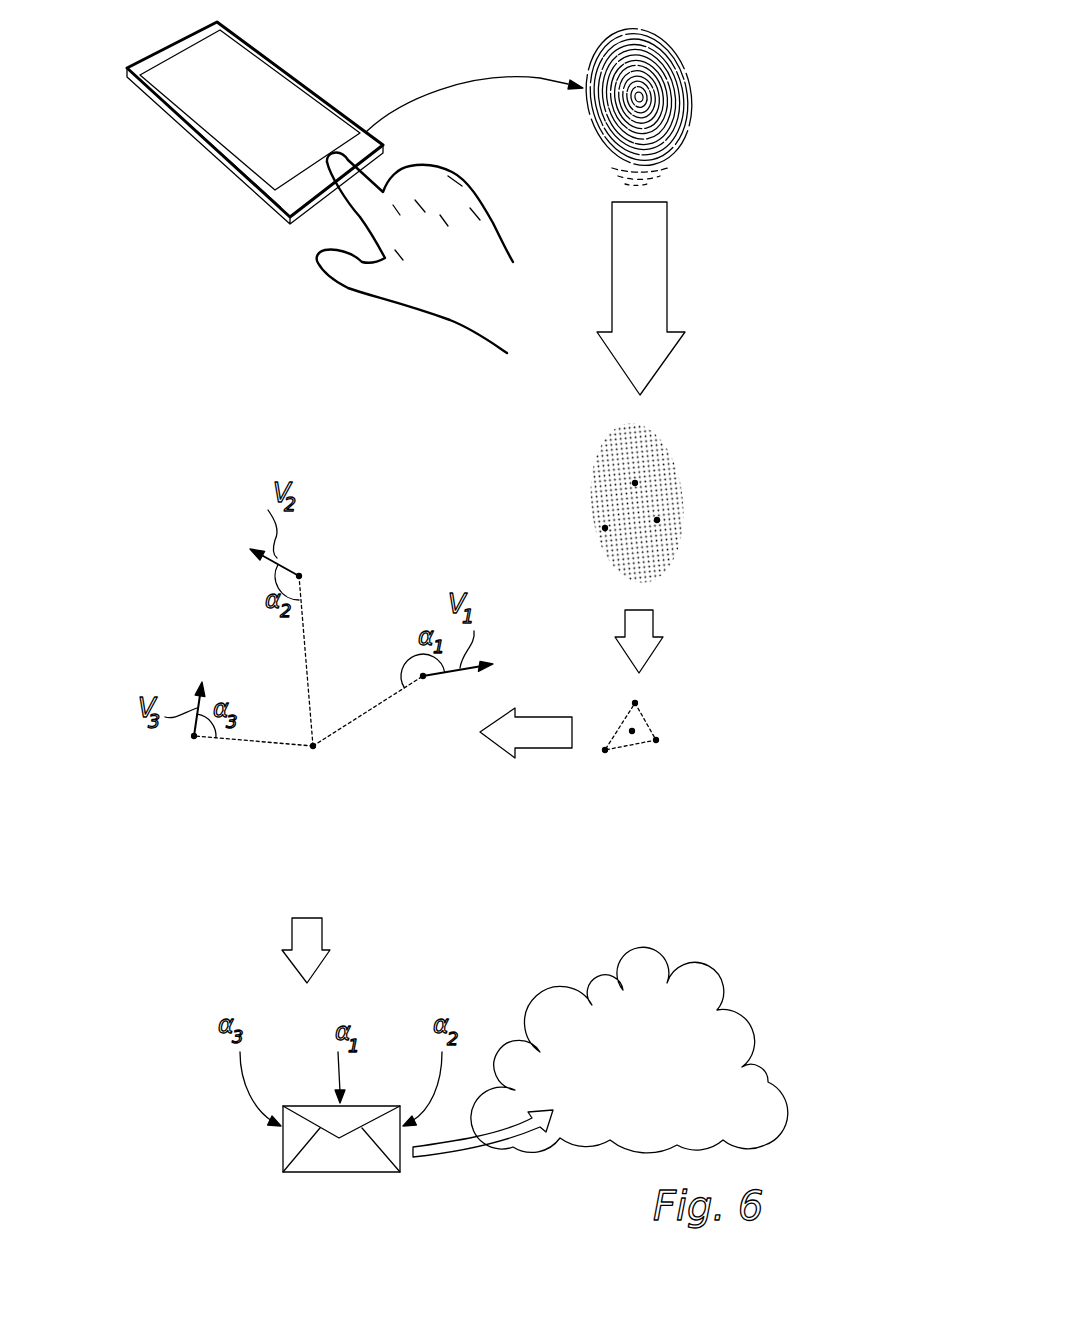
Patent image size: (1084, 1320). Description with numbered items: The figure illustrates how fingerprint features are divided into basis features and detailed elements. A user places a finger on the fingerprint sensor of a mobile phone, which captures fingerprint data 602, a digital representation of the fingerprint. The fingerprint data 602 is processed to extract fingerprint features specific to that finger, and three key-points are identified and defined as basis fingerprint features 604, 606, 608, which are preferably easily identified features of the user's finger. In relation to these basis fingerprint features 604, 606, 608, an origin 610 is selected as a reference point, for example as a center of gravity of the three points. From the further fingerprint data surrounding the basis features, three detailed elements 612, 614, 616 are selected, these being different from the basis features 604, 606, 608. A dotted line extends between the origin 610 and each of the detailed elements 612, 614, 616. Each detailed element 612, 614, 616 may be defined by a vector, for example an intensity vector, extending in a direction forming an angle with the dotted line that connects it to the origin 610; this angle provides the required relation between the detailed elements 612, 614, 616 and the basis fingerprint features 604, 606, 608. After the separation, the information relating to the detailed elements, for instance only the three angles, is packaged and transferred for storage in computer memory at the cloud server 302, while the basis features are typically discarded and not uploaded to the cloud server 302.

The cloud server 302 is at (652, 995).
The fingerprint data 602 is at (673, 50).
The basis fingerprint feature 604 is at (635, 483).
The basis fingerprint feature 606 is at (657, 520).
The basis fingerprint feature 608 is at (605, 528).
The origin 610 is at (632, 731).
The detailed element 612 is at (423, 676).
The detailed element 614 is at (299, 576).
The detailed element 616 is at (194, 736).